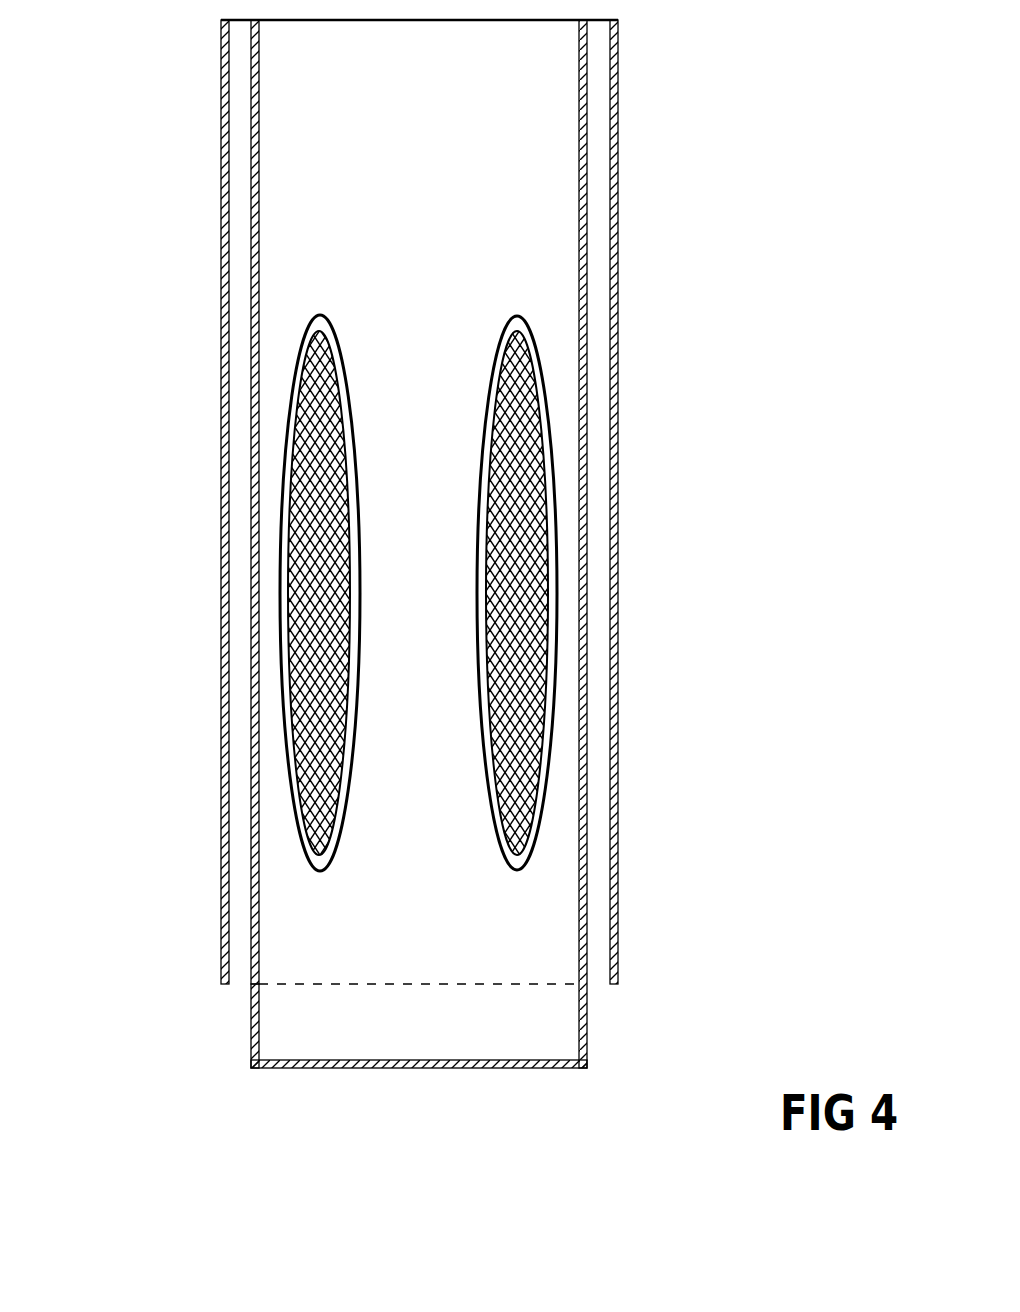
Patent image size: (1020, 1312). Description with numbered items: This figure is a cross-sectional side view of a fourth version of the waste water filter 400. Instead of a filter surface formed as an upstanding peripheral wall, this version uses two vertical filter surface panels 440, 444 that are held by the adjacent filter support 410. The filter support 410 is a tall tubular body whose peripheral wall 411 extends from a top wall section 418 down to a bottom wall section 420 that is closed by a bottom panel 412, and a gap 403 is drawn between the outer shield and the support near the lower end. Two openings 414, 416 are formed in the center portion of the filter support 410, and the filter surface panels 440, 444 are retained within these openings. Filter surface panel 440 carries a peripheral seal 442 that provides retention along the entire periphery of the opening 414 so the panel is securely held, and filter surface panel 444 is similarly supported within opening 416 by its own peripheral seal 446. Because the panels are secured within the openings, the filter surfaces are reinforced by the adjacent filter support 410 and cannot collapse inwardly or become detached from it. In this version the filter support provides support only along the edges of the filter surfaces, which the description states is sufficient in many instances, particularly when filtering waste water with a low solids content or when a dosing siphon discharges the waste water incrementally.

The waste water filter 400 is at (184, 422).
The gap between tubes 403 is at (597, 988).
The filter support 410 is at (549, 177).
The inner tube wall 411 is at (587, 259).
The bottom wall 412 is at (450, 1072).
The opening 414 is at (542, 822).
The opening 416 is at (293, 800).
The outer sleeve 418 is at (220, 127).
The lower portion of inner tube 420 is at (250, 1033).
The filter surface panel 440 is at (528, 415).
The peripheral seal 442 is at (546, 726).
The filter surface panel 444 is at (310, 488).
The left screen frame 446 is at (285, 654).